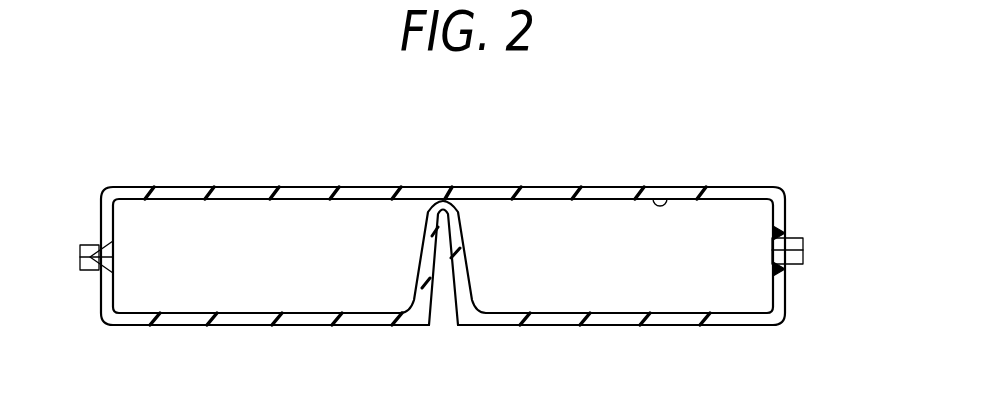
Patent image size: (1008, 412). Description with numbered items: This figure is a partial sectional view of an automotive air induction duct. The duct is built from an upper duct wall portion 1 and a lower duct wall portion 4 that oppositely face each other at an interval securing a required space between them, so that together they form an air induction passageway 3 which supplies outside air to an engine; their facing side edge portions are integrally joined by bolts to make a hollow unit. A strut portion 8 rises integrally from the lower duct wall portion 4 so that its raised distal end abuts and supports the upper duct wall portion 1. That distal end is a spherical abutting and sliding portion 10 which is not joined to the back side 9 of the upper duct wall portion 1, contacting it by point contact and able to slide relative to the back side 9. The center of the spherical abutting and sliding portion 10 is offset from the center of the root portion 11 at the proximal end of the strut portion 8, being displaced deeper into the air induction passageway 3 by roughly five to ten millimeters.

The upper duct wall portion 1 is at (780, 216).
The air induction passageway 3 is at (146, 296).
The lower duct wall portion 4 is at (783, 285).
The strut portion 8 is at (474, 219).
The back side 9 is at (661, 200).
The spherical abutting and sliding portion 10 is at (443, 199).
The root portion 11 is at (457, 320).